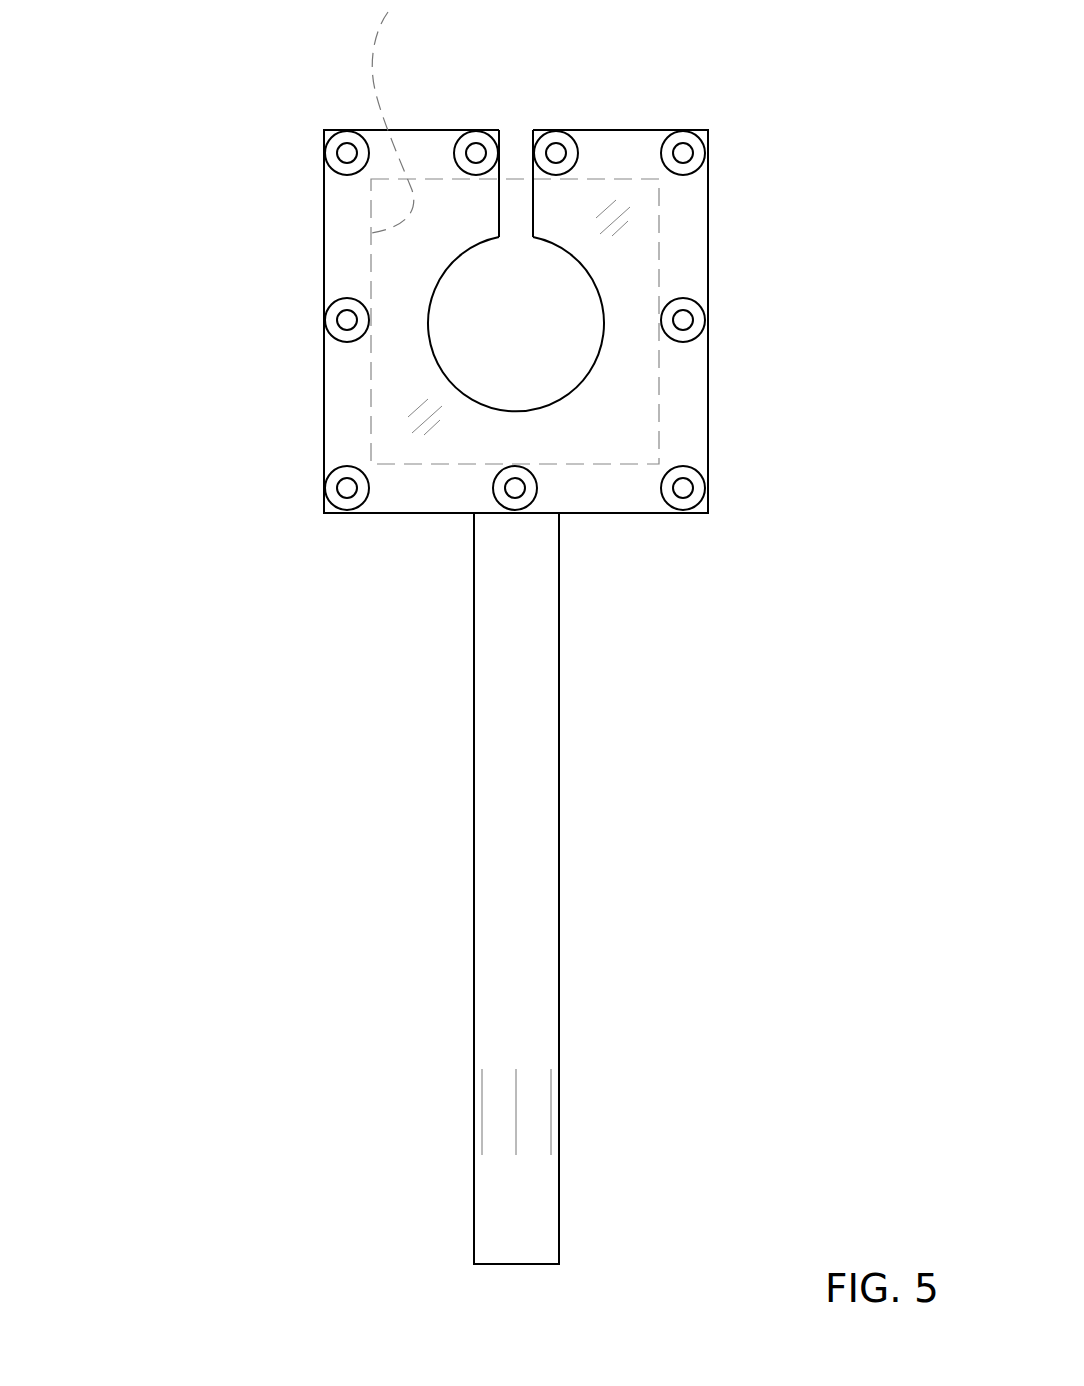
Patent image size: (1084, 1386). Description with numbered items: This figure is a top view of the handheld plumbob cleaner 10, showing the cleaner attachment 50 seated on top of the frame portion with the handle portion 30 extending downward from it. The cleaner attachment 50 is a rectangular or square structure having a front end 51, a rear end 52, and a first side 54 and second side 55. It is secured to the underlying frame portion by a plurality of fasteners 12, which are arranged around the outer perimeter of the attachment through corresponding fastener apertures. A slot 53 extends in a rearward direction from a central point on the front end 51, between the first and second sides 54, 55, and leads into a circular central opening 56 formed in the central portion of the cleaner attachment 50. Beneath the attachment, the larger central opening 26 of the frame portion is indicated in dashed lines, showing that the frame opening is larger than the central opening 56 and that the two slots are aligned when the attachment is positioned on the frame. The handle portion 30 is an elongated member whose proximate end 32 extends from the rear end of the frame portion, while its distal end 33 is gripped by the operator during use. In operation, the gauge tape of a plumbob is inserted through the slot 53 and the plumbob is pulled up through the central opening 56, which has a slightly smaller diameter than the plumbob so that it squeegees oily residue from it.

The handheld plumbob cleaner 10 is at (162, 118).
The fasteners 12 is at (347, 153).
The central opening 26 is at (409, 116).
The handle portion 30 is at (460, 913).
The proximate end 32 is at (474, 543).
The distal end 33 is at (515, 1264).
The cleaner attachment 50 is at (716, 238).
The front end 51 is at (622, 130).
The rear end 52 is at (602, 515).
The slot 53 is at (530, 203).
The first side 54 is at (324, 412).
The second side 55 is at (710, 418).
The central opening 56 is at (596, 362).